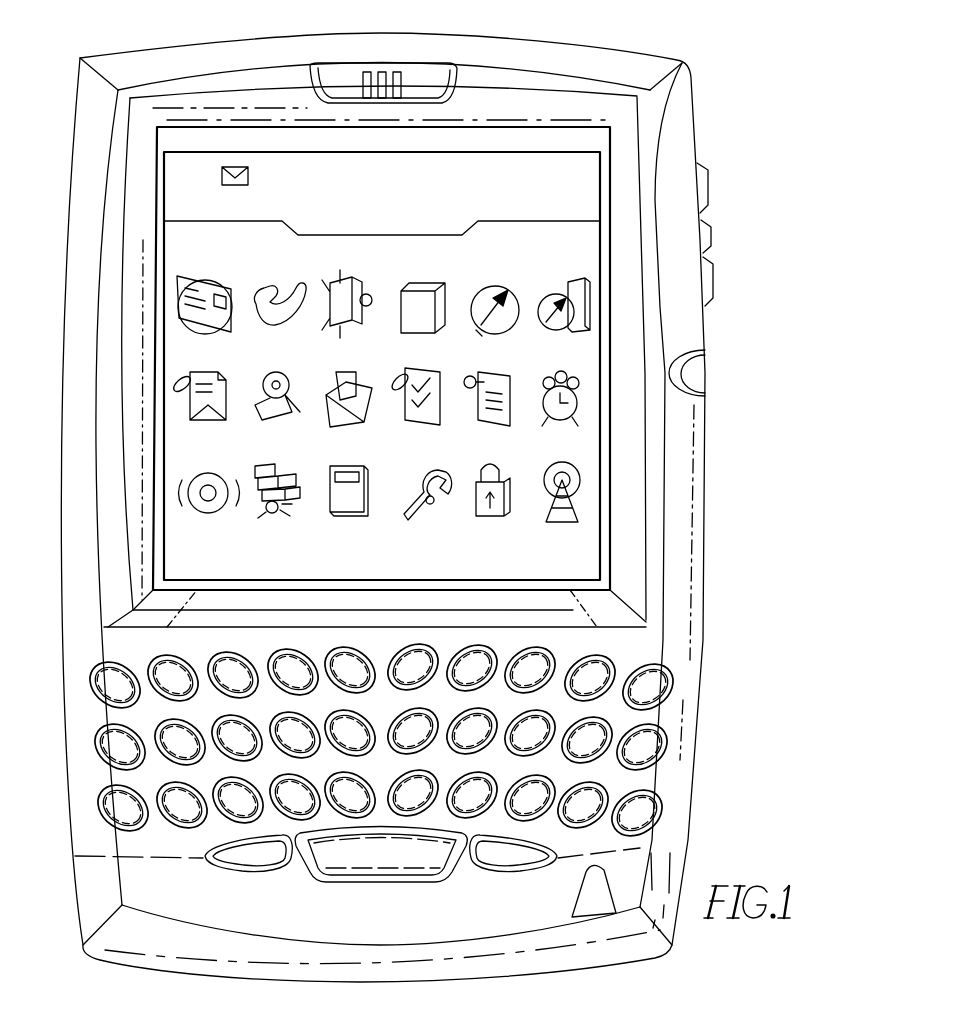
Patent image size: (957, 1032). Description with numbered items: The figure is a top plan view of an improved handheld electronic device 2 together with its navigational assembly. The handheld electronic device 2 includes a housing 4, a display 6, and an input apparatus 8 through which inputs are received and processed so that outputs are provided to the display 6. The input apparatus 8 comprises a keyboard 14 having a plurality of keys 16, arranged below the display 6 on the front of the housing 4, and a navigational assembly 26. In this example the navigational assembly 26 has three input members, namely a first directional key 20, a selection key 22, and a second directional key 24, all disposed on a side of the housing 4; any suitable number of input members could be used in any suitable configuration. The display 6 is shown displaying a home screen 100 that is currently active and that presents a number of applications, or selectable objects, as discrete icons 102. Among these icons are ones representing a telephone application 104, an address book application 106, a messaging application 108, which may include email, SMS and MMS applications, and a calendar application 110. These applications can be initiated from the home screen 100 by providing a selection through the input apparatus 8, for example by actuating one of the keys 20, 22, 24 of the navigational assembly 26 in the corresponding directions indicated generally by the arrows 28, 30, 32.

The handheld electronic device 2 is at (712, 59).
The housing 4 is at (680, 97).
The display 6 is at (588, 178).
The input apparatus 8 is at (757, 298).
The keyboard 14 is at (390, 754).
The keys 16 is at (92, 662).
The first directional key 20 is at (707, 183).
The selection key 22 is at (707, 240).
The second directional key 24 is at (714, 290).
The navigational assembly 26 is at (723, 215).
The arrow 28 is at (716, 188).
The arrow 30 is at (721, 230).
The arrow 32 is at (721, 277).
The home screen 100 is at (183, 240).
The icons 102 is at (213, 273).
The telephone application 104 is at (295, 317).
The address book application 106 is at (338, 336).
The messaging application 108 is at (205, 340).
The calendar application 110 is at (443, 328).